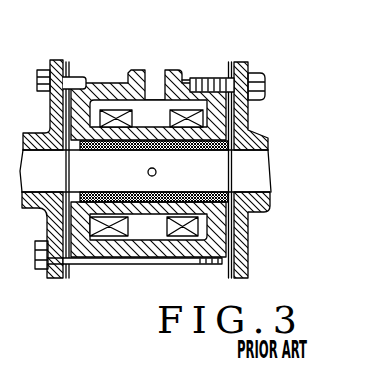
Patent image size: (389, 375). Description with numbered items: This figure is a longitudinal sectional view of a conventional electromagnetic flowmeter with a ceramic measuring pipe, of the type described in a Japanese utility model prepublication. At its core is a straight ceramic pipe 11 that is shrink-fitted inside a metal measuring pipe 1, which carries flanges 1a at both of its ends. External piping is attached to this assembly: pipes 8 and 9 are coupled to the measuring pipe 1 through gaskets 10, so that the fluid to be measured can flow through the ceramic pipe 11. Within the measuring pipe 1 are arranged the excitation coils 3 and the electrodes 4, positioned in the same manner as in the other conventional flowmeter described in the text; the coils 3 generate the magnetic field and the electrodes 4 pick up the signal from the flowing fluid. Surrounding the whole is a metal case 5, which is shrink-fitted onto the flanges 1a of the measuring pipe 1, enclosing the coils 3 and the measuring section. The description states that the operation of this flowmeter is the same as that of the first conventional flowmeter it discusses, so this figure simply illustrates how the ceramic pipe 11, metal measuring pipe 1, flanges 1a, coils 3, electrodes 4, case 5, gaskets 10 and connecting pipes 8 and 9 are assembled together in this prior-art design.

The measuring pipe 1 is at (158, 122).
The flanges 1a is at (74, 90).
The excitation coils 3 is at (111, 110).
The electrodes 4 is at (157, 172).
The metal case 5 is at (92, 264).
The pipe 8 is at (43, 130).
The pipe 9 is at (250, 128).
The gaskets 10 is at (47, 91).
The straight ceramic pipe 11 is at (48, 217).